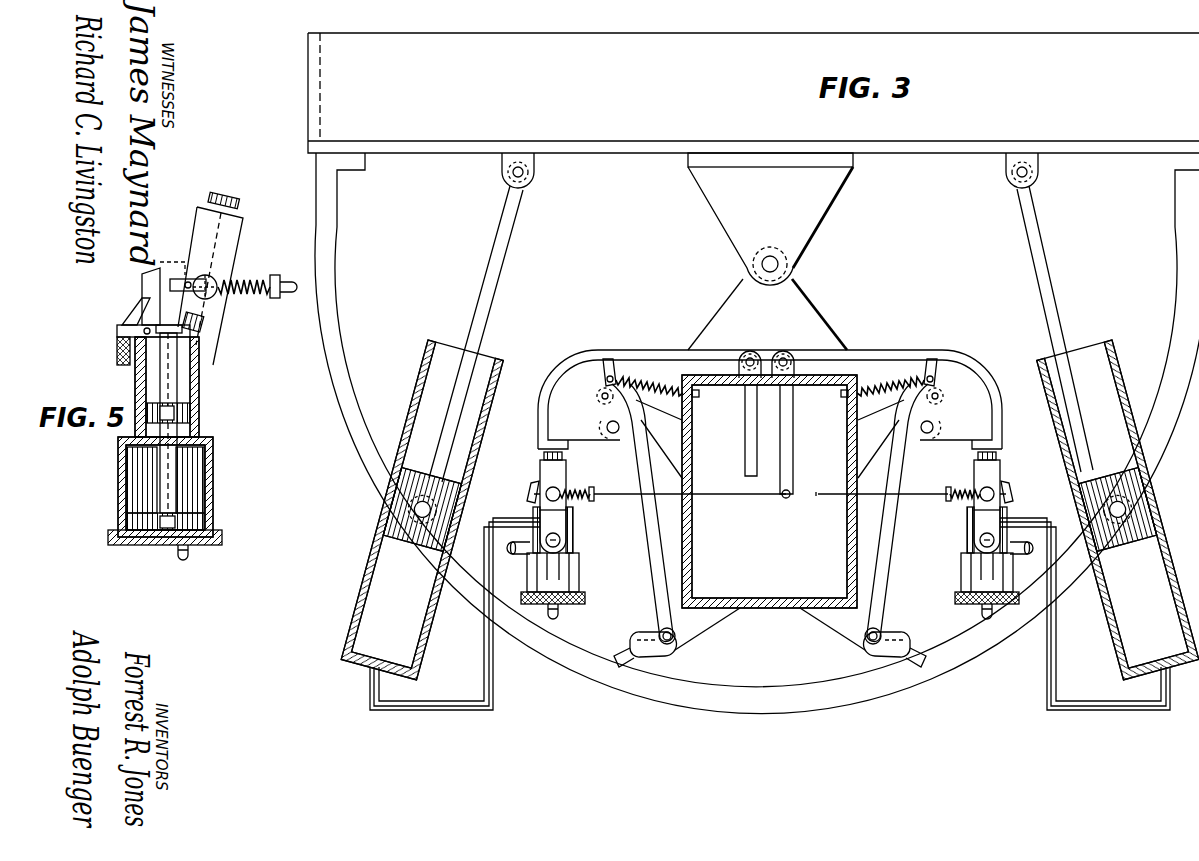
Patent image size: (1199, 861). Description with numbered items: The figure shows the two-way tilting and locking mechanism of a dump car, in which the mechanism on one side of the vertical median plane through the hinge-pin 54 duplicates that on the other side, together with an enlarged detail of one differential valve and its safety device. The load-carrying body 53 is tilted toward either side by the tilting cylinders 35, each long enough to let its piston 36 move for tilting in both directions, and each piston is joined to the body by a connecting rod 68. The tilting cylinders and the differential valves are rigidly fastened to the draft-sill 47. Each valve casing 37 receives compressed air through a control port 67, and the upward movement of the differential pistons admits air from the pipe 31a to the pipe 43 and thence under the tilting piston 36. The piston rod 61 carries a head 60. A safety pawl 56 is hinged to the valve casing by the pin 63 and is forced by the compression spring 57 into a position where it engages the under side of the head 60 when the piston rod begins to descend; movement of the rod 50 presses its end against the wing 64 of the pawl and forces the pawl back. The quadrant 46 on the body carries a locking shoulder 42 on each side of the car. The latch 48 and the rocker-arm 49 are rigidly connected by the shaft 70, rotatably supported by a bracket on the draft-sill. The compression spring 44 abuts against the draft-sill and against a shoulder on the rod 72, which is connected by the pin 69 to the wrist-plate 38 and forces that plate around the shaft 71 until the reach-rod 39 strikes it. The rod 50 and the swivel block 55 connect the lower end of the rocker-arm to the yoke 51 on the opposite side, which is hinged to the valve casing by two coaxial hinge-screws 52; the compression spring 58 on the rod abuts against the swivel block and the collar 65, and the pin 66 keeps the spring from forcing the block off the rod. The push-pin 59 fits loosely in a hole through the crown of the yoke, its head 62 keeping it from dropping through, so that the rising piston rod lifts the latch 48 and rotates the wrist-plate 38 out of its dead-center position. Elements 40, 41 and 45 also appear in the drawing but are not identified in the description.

In FIG. 3, the pipe 31a is at (520, 556).
In FIG. 3, the tilting cylinder 35 is at (770, 510).
In FIG. 3, the piston 36 is at (422, 470).
In FIG. 3, the valve casing 37 is at (566, 583).
In FIG. 5, the valve casing 37 is at (214, 492).
In FIG. 3, the wrist-plate 38 is at (768, 401).
In FIG. 3, the reach-rod 39 is at (652, 552).
In FIG. 3, the pivot 40 is at (670, 645).
In FIG. 3, the lug 41 is at (624, 664).
In FIG. 3, the locking shoulder 42 is at (630, 672).
In FIG. 3, the pipe 43 is at (470, 712).
In FIG. 3, the compression spring 44 is at (655, 383).
In FIG. 3, the cam plate 45 is at (770, 439).
In FIG. 3, the quadrant 46 is at (757, 433).
In FIG. 3, the draft-sill 47 is at (845, 527).
In FIG. 3, the latch 48 is at (650, 350).
In FIG. 3, the rocker-arm 49 is at (750, 432).
In FIG. 3, the rod 50 is at (720, 497).
In FIG. 5, the rod 50 is at (288, 281).
In FIG. 3, the yoke 51 is at (770, 506).
In FIG. 5, the yoke 51 is at (200, 218).
In FIG. 3, the hinge-screw 52 is at (561, 540).
In FIG. 3, the body 53 is at (753, 93).
In FIG. 3, the hinge-pin 54 is at (778, 264).
In FIG. 3, the swivel block 55 is at (559, 490).
In FIG. 5, the swivel block 55 is at (212, 278).
In FIG. 3, the safety pawl 56 is at (528, 492).
In FIG. 5, the safety pawl 56 is at (147, 302).
In FIG. 5, the compression spring 57 is at (117, 346).
In FIG. 3, the compression spring 58 is at (580, 500).
In FIG. 5, the compression spring 58 is at (235, 282).
In FIG. 5, the push-pin 59 is at (207, 320).
In FIG. 5, the head 60 is at (183, 330).
In FIG. 5, the piston rod 61 is at (176, 483).
In FIG. 3, the head 62 is at (544, 456).
In FIG. 5, the head 62 is at (226, 200).
In FIG. 5, the pin 63 is at (130, 330).
In FIG. 5, the wing 64 is at (150, 283).
In FIG. 3, the collar 65 is at (596, 496).
In FIG. 5, the collar 65 is at (275, 275).
In FIG. 5, the pin 66 is at (187, 282).
In FIG. 3, the control port 67 is at (559, 612).
In FIG. 5, the control port 67 is at (189, 556).
In FIG. 3, the connecting rod 68 is at (490, 266).
In FIG. 3, the pin 69 is at (606, 374).
In FIG. 3, the shaft 70 is at (783, 358).
In FIG. 3, the shaft 71 is at (606, 427).
In FIG. 3, the rod 72 is at (698, 398).